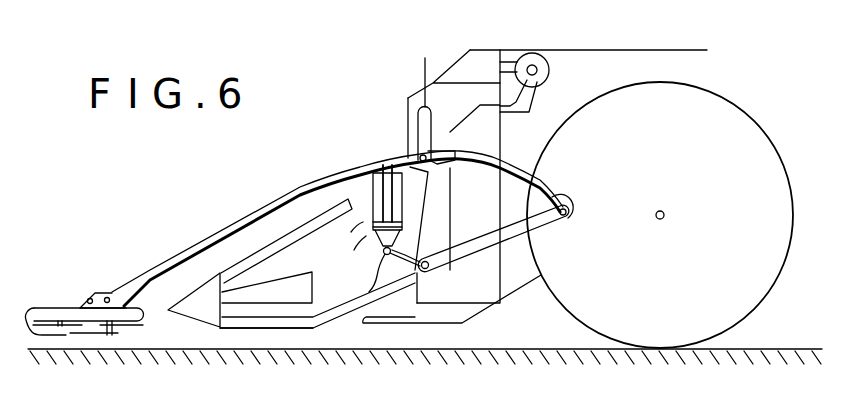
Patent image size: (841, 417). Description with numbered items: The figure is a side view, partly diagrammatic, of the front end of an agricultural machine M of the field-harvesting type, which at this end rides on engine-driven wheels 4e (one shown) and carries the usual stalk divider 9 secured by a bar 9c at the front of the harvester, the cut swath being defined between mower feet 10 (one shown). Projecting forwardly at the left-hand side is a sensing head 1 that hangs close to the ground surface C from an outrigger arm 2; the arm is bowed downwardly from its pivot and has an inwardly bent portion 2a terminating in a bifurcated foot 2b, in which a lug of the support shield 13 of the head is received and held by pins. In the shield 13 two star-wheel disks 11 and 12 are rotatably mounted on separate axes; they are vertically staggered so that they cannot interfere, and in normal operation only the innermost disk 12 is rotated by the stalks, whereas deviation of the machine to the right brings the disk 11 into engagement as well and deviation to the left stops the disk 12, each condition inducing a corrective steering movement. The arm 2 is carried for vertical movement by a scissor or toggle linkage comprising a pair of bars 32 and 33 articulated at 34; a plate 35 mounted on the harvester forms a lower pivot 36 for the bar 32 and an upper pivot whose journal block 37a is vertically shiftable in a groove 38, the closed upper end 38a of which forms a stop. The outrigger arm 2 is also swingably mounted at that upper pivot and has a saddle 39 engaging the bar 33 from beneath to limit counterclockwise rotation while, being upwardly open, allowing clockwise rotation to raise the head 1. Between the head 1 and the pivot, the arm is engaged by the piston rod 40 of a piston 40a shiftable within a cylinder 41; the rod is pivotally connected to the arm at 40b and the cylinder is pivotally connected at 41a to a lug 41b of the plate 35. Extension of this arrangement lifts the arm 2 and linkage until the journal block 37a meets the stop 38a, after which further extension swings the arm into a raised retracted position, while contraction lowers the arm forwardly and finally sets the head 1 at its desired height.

The sensing head 1 is at (124, 262).
The outrigger arm 2 is at (218, 222).
The inwardly bent portion 2a is at (168, 264).
The bifurcated foot 2b is at (100, 290).
The engine-driven wheel 4e is at (786, 287).
The stalk divider 9 is at (199, 308).
The bar 9c is at (258, 342).
The mower foot 10 is at (378, 341).
The disk 11 is at (41, 337).
The disk 12 is at (97, 336).
The support shield 13 is at (39, 310).
The bar 32 is at (472, 250).
The bar 33 is at (487, 170).
The articulation 34 is at (566, 218).
The plate 35 is at (445, 221).
The pivot 36 is at (419, 269).
The journal block 37a is at (430, 142).
The groove 38 is at (416, 110).
The upper end of groove 38a is at (433, 71).
The saddle 39 is at (456, 157).
The piston rod 40 is at (374, 170).
The piston 40a is at (380, 259).
The pivotal connection 40b is at (388, 154).
The cylinder 41 is at (358, 222).
The pivotal connection 41a is at (370, 286).
The lug 41b is at (404, 260).
The ground surface C is at (168, 346).
The agricultural machine M is at (599, 61).